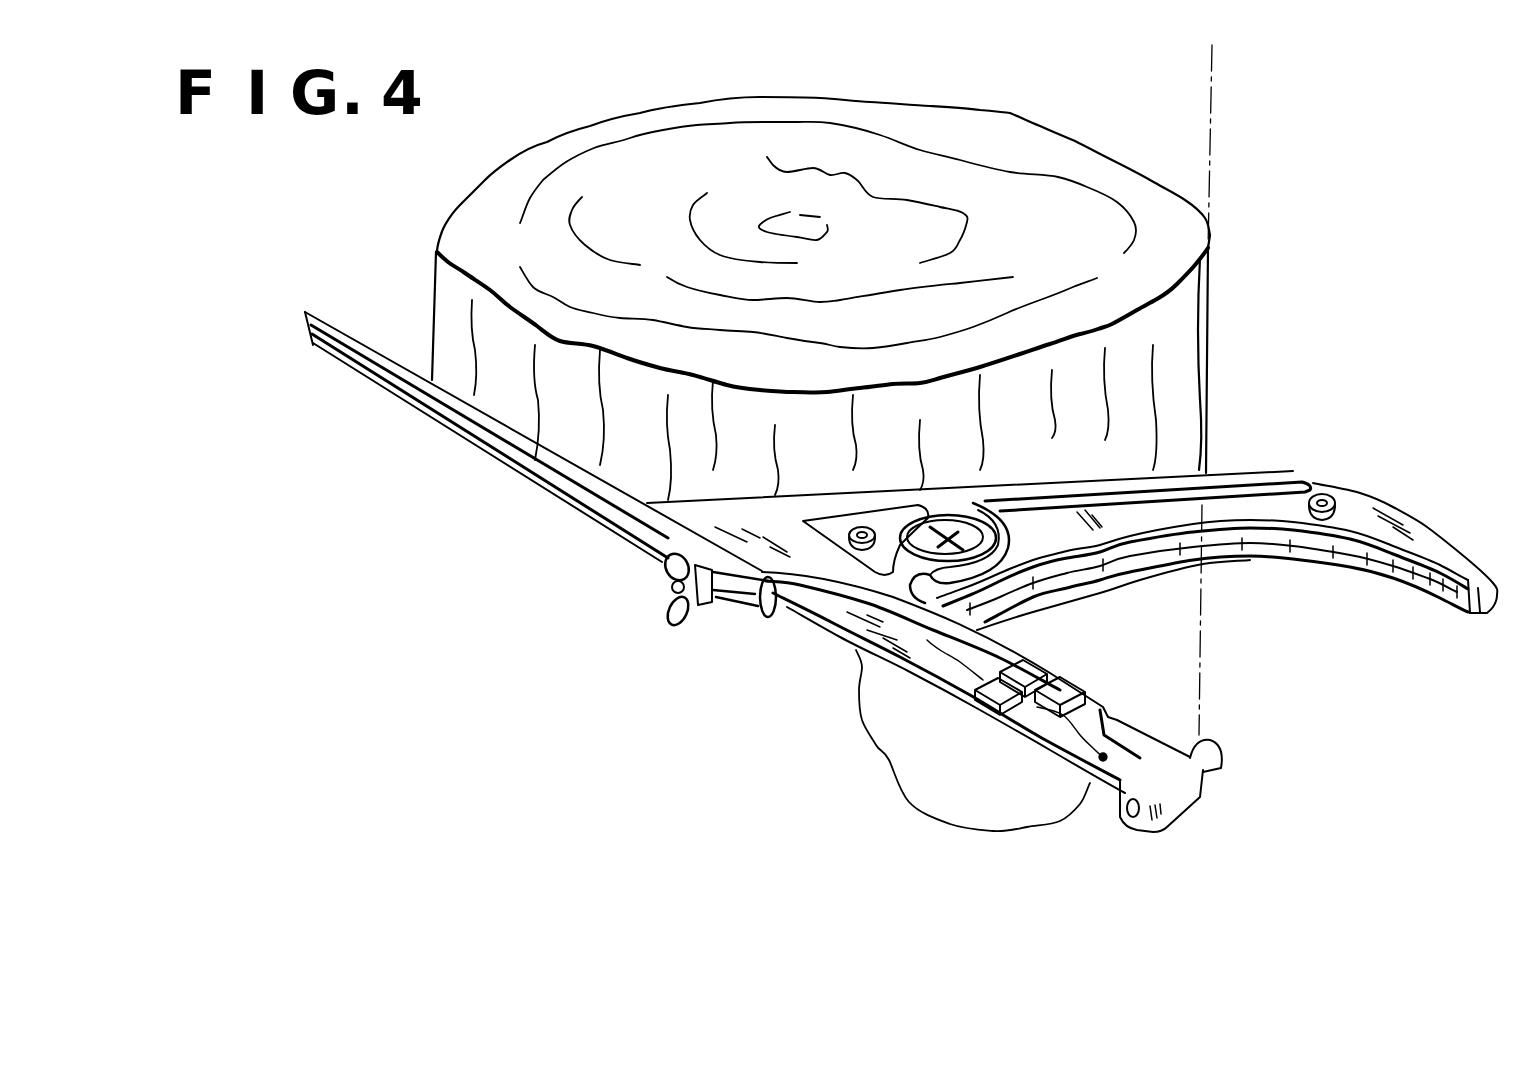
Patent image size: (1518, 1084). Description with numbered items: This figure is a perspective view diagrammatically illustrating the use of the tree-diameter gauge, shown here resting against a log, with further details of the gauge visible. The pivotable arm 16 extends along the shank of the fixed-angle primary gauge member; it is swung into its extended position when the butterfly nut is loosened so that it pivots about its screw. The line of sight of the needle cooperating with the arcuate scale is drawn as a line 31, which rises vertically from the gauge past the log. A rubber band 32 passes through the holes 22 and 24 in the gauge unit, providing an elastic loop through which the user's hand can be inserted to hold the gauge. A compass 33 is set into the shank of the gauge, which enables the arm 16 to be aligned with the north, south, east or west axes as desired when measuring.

The arm 16 is at (405, 387).
The hole 22 is at (847, 540).
The hole 24 is at (1103, 760).
The line of sight 31 is at (1200, 667).
The rubber band 32 is at (887, 762).
The compass 33 is at (930, 527).